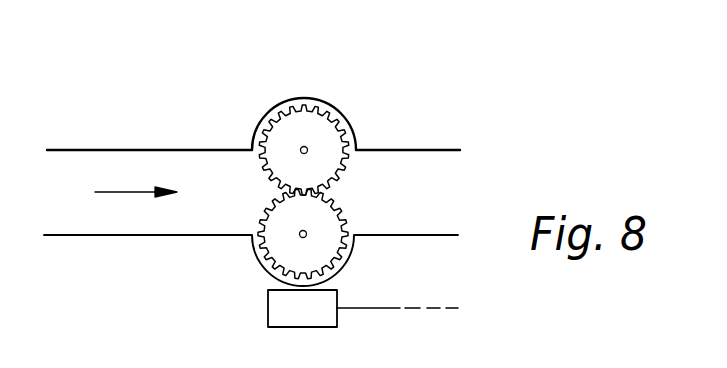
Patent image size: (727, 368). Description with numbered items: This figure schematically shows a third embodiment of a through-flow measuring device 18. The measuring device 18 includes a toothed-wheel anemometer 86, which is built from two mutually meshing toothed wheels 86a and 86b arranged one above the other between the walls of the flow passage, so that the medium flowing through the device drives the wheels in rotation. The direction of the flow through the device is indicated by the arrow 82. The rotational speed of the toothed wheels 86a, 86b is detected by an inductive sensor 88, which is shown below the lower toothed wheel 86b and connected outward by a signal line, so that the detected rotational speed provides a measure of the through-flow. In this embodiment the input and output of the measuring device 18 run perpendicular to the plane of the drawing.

The through-flow measuring device 18 is at (248, 118).
The toothed-wheel anemometer 86 is at (350, 113).
The toothed wheel 86a is at (308, 120).
The toothed wheel 86b is at (280, 240).
The flow direction 82 is at (112, 193).
The inductive sensor 88 is at (281, 304).